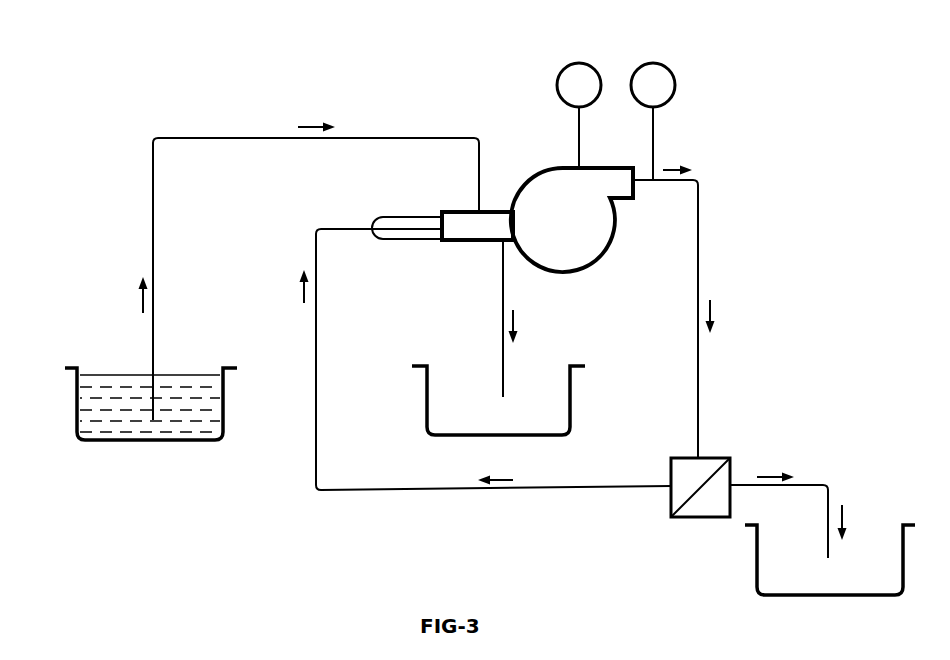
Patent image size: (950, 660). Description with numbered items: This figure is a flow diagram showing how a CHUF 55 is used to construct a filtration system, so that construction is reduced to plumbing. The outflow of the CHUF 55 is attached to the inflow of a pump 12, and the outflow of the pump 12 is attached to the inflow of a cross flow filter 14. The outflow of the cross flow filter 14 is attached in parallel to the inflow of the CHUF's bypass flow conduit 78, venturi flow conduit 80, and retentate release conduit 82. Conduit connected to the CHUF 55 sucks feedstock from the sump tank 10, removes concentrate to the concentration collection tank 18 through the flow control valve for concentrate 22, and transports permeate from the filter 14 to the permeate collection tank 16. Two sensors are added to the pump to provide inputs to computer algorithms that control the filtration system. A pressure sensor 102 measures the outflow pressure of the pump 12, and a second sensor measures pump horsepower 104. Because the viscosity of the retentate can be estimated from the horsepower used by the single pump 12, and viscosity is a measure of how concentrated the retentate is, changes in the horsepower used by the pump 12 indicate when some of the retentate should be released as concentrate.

The sump tank 10 is at (78, 412).
The pump 12 is at (600, 260).
The cross flow filter 14 is at (728, 463).
The permeate collection tank 16 is at (755, 553).
The concentration collection tank 18 is at (425, 387).
The flow control valve for concentrate 22 is at (497, 242).
The CHUF 55 is at (466, 211).
The bypass flow conduit 78 is at (395, 215).
The venturi flow conduit 80 is at (421, 231).
The retentate release conduit 82 is at (378, 244).
The pressure sensor 102 is at (667, 63).
The pump horsepower sensor 104 is at (565, 63).